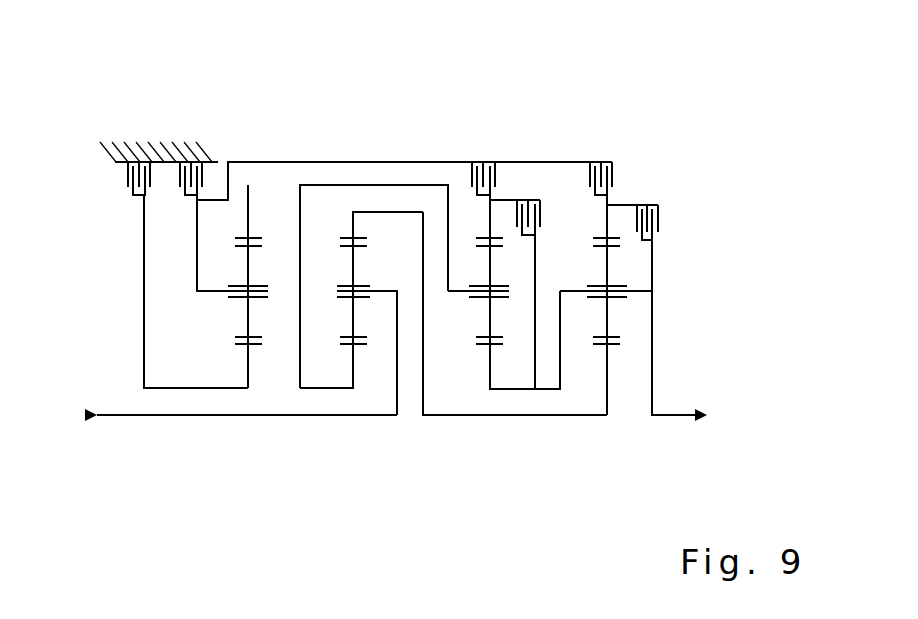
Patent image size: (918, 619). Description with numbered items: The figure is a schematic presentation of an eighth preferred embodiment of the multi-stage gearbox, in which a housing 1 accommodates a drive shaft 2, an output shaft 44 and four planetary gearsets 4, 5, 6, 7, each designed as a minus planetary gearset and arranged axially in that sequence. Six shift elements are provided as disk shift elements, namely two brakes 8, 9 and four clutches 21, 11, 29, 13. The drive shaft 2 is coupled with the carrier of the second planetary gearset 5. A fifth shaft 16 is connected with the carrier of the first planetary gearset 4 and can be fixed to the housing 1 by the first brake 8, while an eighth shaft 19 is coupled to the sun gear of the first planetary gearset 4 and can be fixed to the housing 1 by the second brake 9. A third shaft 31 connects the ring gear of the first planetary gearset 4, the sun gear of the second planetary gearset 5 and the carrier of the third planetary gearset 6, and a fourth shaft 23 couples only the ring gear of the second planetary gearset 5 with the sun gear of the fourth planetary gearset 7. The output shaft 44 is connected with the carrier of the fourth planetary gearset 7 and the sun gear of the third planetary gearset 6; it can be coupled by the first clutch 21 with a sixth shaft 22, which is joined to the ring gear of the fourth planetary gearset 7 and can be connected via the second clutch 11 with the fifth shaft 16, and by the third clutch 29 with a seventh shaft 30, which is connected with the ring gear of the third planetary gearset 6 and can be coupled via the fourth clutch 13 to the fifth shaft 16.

The housing 1 is at (150, 160).
The second brake 9 is at (135, 180).
The first brake 8 is at (190, 183).
The fifth shaft 16 is at (322, 160).
The third shaft 31 is at (278, 186).
The first planetary gearset 4 is at (249, 150).
The second planetary gearset 5 is at (354, 150).
The third planetary gearset 6 is at (490, 150).
The fourth planetary gearset 7 is at (608, 150).
The fourth clutch 13 is at (478, 182).
The seventh shaft 30 is at (507, 200).
The third clutch 29 is at (532, 210).
The second clutch 11 is at (607, 174).
The sixth shaft 22 is at (622, 205).
The first clutch 21 is at (645, 222).
The eighth shaft 19 is at (143, 328).
The drive shaft 2 is at (313, 416).
The fourth shaft 23 is at (441, 416).
The output shaft 44 is at (652, 353).